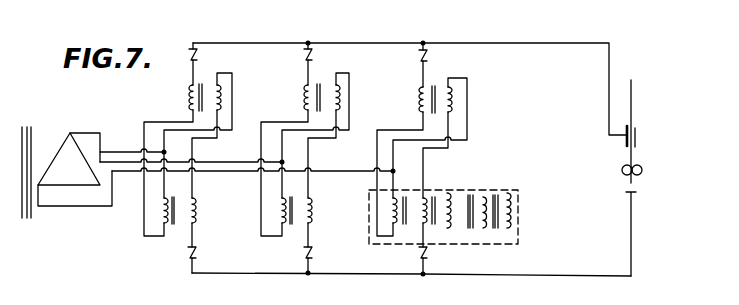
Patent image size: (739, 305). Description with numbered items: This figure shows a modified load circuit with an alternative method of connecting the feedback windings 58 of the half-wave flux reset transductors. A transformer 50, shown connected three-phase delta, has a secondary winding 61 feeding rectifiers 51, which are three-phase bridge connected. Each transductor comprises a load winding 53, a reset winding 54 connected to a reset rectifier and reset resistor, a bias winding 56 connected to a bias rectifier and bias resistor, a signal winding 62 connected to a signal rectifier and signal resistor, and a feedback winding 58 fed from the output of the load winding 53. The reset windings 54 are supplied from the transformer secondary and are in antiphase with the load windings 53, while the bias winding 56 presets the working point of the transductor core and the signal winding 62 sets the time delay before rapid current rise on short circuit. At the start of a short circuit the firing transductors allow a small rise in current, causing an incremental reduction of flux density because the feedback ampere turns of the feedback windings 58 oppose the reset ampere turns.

The transformer 50 is at (31, 128).
The secondary winding 61 is at (75, 159).
The rectifiers 51 is at (195, 56).
The feedback winding 58 is at (227, 101).
The load winding 53 is at (419, 196).
The reset winding 54 is at (447, 193).
The bias winding 56 is at (483, 197).
The signal winding 62 is at (507, 193).